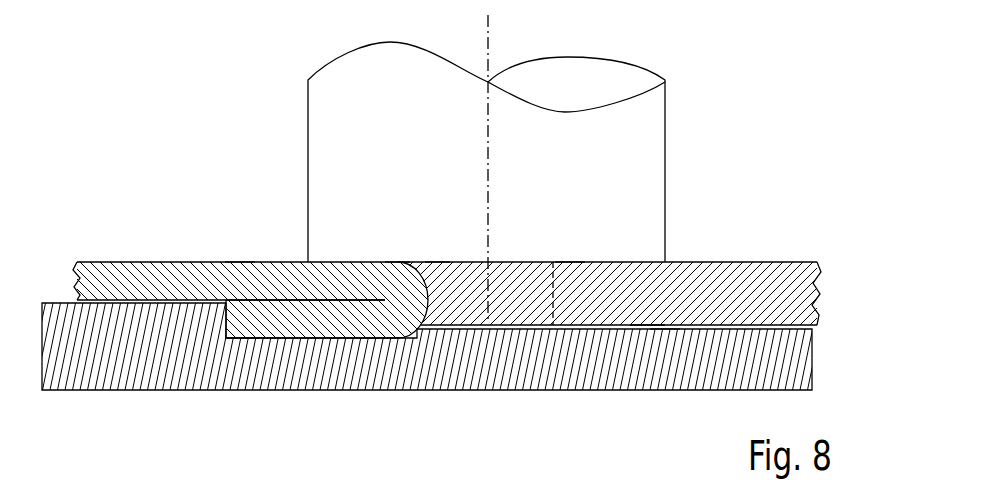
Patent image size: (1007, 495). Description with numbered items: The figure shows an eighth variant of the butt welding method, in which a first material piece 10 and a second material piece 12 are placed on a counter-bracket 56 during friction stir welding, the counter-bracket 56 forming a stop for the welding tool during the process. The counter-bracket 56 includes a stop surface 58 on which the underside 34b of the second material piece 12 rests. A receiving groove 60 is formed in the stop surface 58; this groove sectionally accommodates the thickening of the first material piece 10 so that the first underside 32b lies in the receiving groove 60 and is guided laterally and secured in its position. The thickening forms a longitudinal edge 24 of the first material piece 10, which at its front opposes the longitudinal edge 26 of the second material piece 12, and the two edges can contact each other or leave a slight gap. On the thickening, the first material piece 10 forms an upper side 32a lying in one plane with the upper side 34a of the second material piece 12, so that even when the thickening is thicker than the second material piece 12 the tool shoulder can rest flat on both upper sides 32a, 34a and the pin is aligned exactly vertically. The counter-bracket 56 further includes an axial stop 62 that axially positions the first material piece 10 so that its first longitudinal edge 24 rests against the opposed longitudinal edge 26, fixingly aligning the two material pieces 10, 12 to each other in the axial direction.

The first material piece 10 is at (113, 272).
The second material piece 12 is at (748, 280).
The longitudinal edge of the first material piece 24 is at (398, 250).
The longitudinal edge of the second material piece 26 is at (437, 250).
The upper side of the first material piece 32a is at (240, 250).
The underside of the first material piece 32b is at (245, 353).
The upper side of the second material piece 34a is at (569, 250).
The underside of the second material piece 34b is at (664, 342).
The counter-bracket 56 is at (353, 377).
The stop surface 58 is at (645, 312).
The receiving groove 60 is at (310, 322).
The axial stop 62 is at (240, 316).